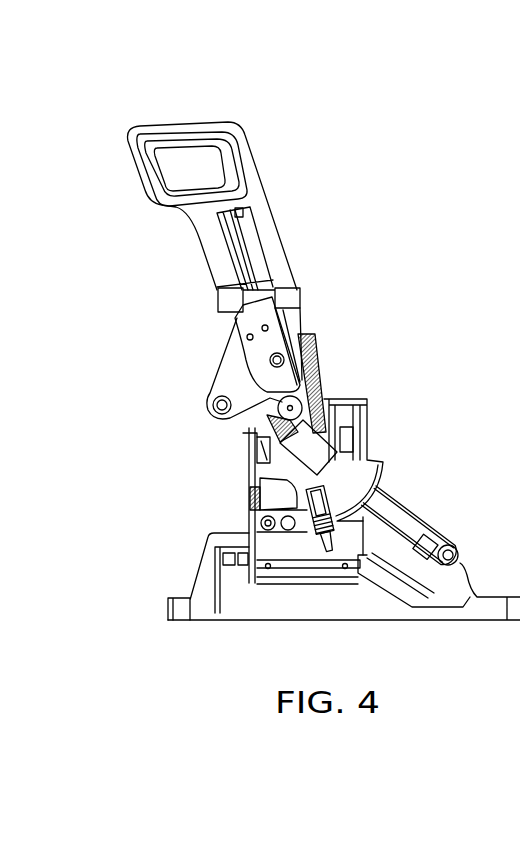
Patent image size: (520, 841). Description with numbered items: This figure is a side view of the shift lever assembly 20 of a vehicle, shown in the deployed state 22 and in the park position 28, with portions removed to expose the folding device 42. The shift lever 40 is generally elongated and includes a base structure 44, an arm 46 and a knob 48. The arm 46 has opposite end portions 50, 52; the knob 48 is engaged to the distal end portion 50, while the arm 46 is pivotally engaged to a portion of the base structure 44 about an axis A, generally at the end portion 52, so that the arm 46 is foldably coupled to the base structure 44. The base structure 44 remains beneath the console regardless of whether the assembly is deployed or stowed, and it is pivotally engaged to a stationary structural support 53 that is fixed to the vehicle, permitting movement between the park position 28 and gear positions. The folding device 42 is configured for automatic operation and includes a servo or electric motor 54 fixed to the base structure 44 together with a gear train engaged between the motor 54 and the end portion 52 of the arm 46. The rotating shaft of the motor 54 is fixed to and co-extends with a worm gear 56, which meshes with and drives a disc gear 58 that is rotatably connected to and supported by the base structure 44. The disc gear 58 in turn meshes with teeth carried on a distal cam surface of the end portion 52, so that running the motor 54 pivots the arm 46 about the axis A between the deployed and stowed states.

The shift lever assembly 20 is at (371, 108).
The deployed state 22 is at (371, 165).
The park position 28 is at (371, 222).
The shift lever 40 is at (294, 268).
The folding device 42 is at (332, 401).
The base structure 44 is at (211, 372).
The arm 46 is at (300, 318).
The knob 48 is at (140, 187).
The end portion 50 is at (275, 212).
The end portion 52 is at (320, 365).
The structural support 53 is at (400, 518).
The motor 54 is at (370, 447).
The worm gear 56 is at (243, 453).
The disc gear 58 is at (264, 420).
The axis A is at (268, 362).